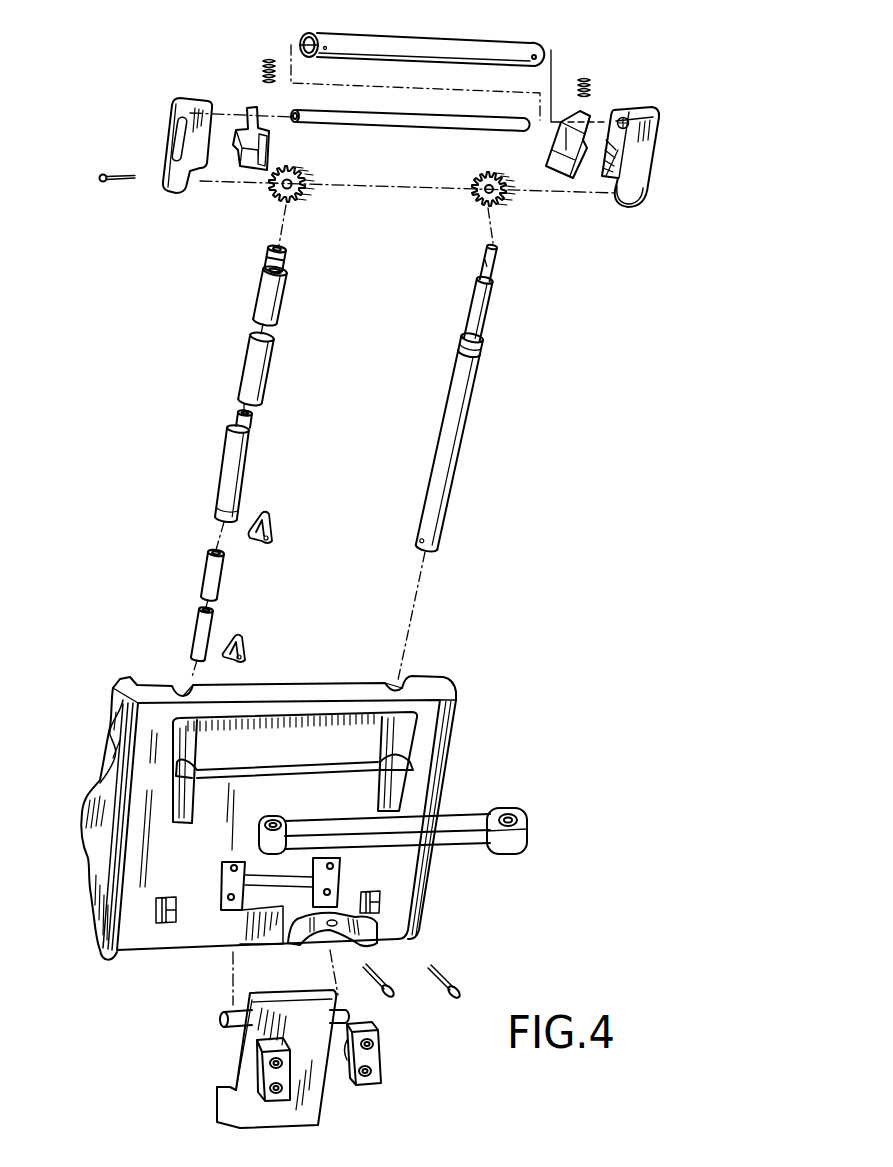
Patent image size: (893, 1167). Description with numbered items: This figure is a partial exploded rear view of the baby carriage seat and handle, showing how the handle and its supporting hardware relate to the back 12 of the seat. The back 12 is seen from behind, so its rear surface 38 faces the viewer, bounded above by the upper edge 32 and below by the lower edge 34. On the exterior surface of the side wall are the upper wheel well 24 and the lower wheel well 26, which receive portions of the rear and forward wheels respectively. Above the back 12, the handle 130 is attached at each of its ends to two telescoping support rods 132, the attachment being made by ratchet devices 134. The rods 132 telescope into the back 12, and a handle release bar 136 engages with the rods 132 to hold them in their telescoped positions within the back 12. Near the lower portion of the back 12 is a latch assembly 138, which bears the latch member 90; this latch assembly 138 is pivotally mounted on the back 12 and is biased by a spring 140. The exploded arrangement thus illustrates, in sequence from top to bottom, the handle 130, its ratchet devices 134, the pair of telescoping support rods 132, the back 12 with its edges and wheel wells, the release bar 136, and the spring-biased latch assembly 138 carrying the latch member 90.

The back 12 is at (299, 806).
The upper wheel well 24 is at (101, 785).
The lower wheel well 26 is at (90, 855).
The upper edge 32 is at (283, 702).
The lower edge 34 is at (183, 953).
The rear surface 38 is at (428, 733).
The latch member 90 is at (217, 1107).
The handle 130 is at (510, 120).
The telescoping support rods 132 is at (243, 363).
The ratchet devices 134 is at (220, 203).
The handle release bar 136 is at (463, 820).
The latch assembly 138 is at (308, 1098).
The spring 140 is at (373, 933).